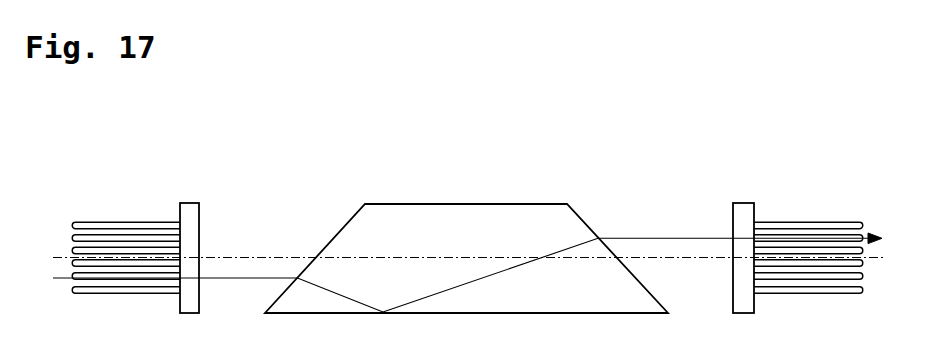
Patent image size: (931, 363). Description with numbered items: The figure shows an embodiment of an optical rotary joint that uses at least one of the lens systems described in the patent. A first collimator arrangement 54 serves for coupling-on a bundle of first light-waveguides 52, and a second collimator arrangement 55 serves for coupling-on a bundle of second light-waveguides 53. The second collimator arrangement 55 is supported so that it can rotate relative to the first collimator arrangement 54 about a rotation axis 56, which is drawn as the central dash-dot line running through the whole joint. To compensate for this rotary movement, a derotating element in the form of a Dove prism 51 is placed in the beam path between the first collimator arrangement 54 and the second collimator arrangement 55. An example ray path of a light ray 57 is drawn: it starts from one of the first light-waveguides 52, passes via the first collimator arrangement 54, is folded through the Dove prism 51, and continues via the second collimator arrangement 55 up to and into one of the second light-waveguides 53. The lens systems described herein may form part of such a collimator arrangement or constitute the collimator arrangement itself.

The Dove prism 51 is at (512, 212).
The first light-waveguides 52 is at (147, 223).
The second light-waveguides 53 is at (808, 218).
The first collimator arrangement 54 is at (187, 218).
The second collimator arrangement 55 is at (748, 212).
The rotation axis 56 is at (367, 258).
The light ray 57 is at (503, 275).